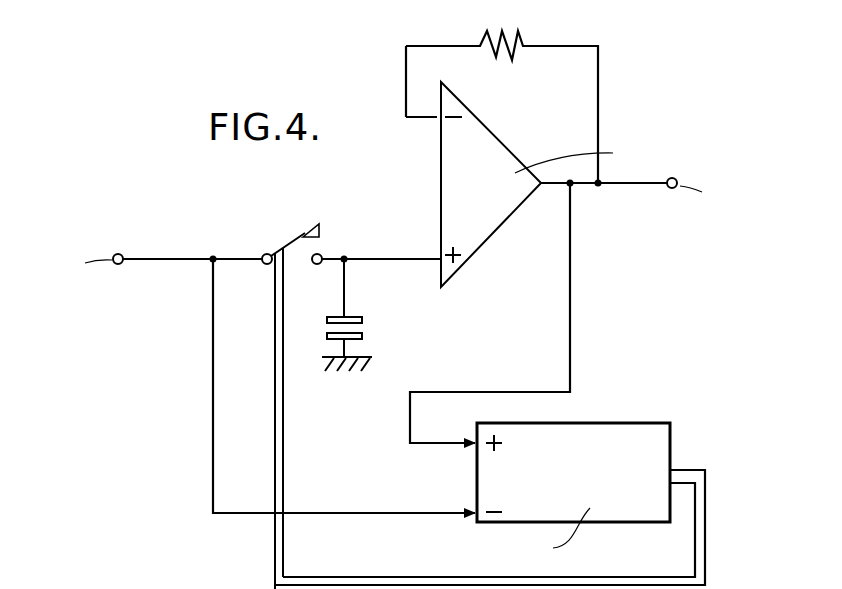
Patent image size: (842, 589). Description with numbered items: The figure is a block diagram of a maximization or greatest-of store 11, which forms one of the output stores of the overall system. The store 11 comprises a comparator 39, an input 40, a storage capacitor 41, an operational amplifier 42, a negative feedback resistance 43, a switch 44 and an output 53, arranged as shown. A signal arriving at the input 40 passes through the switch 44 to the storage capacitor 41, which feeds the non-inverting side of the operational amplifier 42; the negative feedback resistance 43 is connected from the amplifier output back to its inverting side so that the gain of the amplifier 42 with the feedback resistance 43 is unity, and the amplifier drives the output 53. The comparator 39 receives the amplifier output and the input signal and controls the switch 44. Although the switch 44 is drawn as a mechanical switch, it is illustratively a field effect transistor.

The maximization store 11 is at (648, 330).
The comparator 39 is at (603, 468).
The input 40 is at (121, 253).
The storage capacitor 41 is at (355, 316).
The operational amplifier 42 is at (460, 197).
The negative feedback resistance 43 is at (497, 57).
The switch 44 is at (283, 248).
The output 53 is at (676, 189).